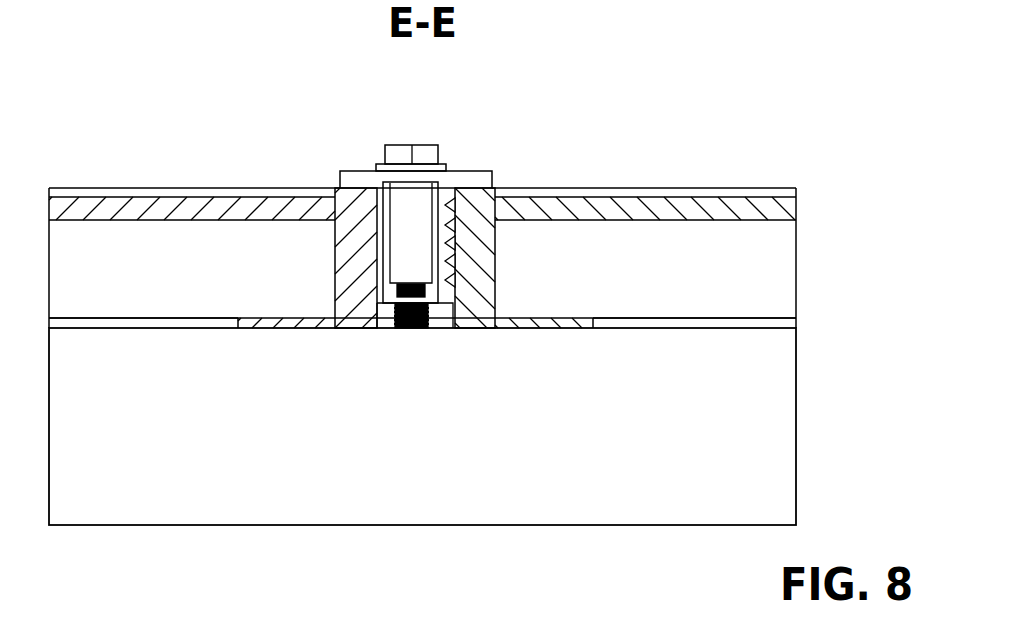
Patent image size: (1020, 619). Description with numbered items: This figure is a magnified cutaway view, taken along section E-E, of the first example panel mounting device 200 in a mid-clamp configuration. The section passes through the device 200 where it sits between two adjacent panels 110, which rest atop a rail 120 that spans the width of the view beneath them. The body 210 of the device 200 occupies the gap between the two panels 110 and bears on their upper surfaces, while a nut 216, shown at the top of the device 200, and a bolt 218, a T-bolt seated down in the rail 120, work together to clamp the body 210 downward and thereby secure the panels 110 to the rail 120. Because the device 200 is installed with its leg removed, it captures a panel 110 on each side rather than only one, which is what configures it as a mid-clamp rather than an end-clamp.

The panel 110 is at (213, 188).
The rail 120 is at (796, 365).
The first example panel mounting device 200 is at (469, 118).
The body 210 is at (348, 171).
The nut 216 is at (398, 145).
The bolt 218 is at (427, 322).